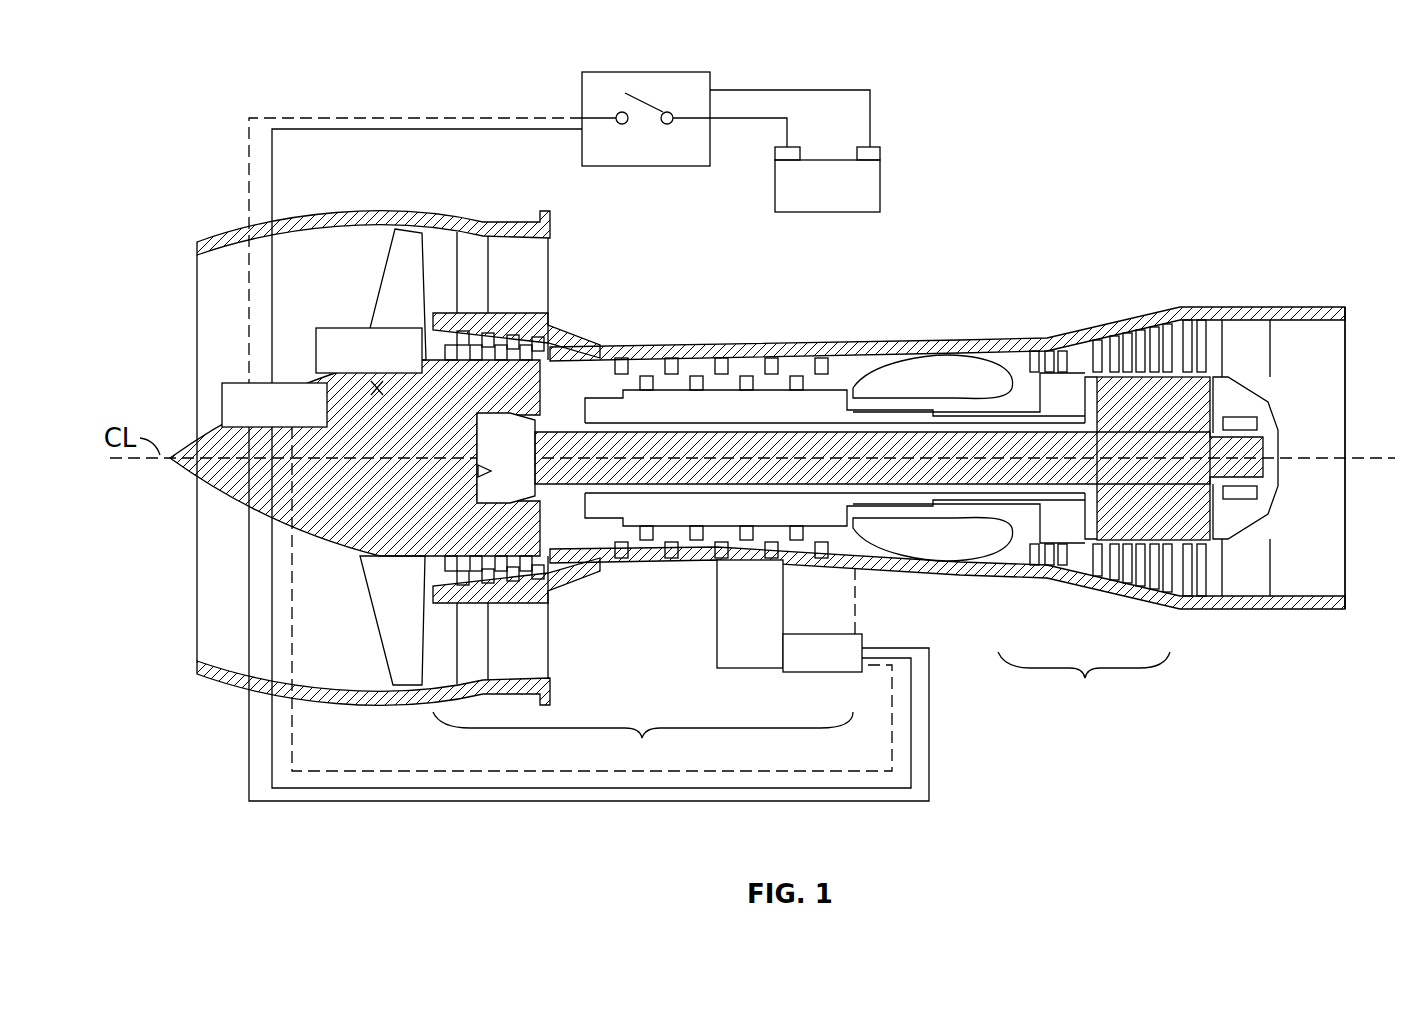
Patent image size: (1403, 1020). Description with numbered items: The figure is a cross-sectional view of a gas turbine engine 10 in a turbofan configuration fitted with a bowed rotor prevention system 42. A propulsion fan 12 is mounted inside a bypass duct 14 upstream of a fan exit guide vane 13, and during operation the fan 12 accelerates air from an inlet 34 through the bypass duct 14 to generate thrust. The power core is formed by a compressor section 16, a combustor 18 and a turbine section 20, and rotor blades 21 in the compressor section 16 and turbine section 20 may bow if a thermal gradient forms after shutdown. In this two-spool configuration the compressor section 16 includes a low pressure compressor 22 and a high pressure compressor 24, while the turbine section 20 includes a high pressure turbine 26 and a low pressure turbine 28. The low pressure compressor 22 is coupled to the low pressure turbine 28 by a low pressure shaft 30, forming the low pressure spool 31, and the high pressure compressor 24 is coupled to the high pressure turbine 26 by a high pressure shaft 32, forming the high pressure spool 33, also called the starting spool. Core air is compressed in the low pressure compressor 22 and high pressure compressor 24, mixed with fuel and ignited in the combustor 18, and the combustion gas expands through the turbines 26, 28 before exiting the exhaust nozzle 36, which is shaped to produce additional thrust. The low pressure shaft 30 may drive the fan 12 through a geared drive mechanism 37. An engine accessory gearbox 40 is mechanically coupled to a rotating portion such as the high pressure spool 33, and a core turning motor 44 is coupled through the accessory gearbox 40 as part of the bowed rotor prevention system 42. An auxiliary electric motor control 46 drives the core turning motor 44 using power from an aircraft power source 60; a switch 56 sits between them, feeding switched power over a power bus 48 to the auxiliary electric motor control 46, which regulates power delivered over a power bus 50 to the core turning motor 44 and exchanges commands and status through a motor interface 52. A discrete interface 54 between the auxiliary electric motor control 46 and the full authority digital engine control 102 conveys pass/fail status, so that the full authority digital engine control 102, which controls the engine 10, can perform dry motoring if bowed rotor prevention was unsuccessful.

The gas turbine engine 10 is at (768, 445).
The propulsion fan 12 is at (390, 290).
The fan exit guide vane 13 is at (470, 252).
The bypass duct 14 is at (550, 283).
The compressor section 16 is at (652, 634).
The combustor 18 is at (942, 373).
The turbine section 20 is at (1084, 685).
The rotor blades 21 is at (843, 383).
The low pressure compressor 22 is at (546, 569).
The high pressure compressor 24 is at (835, 472).
The high pressure turbine 26 is at (1120, 453).
The low pressure turbine 28 is at (1167, 600).
The low pressure shaft 30 is at (975, 478).
The low pressure spool 31 is at (1188, 395).
The high pressure shaft 32 is at (872, 498).
The high pressure spool 33 is at (700, 410).
The inlet 34 is at (208, 313).
The exhaust nozzle 36 is at (1332, 378).
The geared drive mechanism 37 is at (478, 472).
The engine accessory gearbox 40 is at (715, 645).
The bowed rotor prevention system 42 is at (765, 158).
The core turning motor 44 is at (792, 673).
The auxiliary electric motor control 46 is at (222, 400).
The power bus 48 is at (286, 116).
The power bus 50 is at (842, 770).
The motor interface 52 is at (320, 801).
The discrete interface 54 is at (384, 390).
The switch 56 is at (592, 70).
The aircraft power source 60 is at (885, 188).
The full authority digital engine control 102 is at (343, 326).